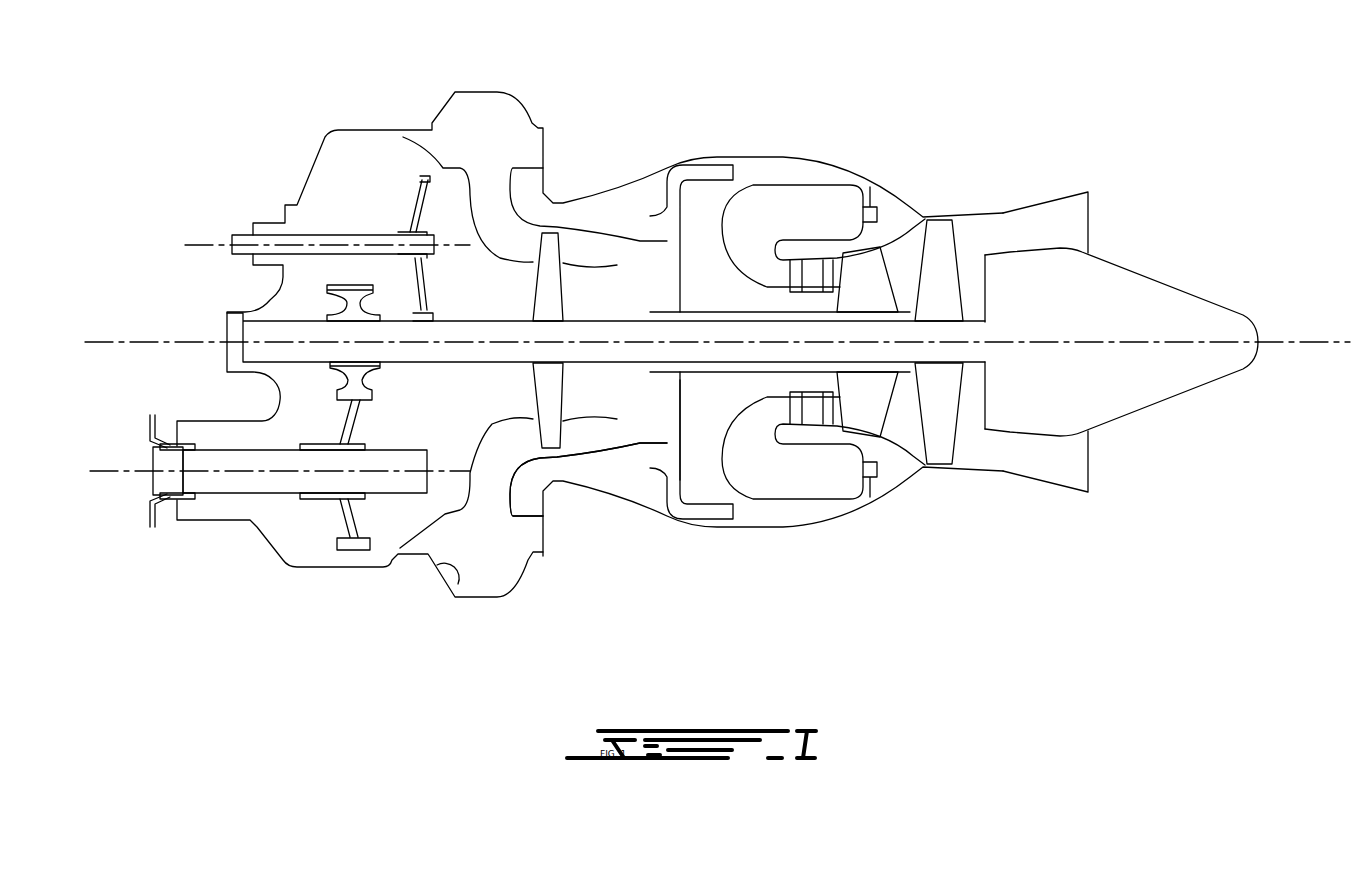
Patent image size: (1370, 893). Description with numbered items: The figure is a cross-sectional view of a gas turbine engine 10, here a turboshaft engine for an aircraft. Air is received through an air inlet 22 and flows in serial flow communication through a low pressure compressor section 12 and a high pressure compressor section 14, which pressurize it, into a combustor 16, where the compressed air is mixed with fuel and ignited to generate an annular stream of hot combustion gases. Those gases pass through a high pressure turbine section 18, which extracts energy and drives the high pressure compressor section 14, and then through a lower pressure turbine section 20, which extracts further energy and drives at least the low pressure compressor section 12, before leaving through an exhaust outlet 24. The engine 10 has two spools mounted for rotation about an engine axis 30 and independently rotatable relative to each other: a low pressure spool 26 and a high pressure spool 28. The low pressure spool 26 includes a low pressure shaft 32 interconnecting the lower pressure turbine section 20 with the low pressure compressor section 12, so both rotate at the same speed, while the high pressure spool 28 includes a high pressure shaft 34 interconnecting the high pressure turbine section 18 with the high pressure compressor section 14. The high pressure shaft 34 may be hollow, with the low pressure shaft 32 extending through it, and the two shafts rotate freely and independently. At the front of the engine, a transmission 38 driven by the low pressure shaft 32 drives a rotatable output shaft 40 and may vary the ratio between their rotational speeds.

The gas turbine engine 10 is at (1096, 146).
The low pressure compressor section 12 is at (553, 233).
The high pressure compressor section 14 is at (657, 270).
The combustor 16 is at (828, 213).
The high pressure turbine section 18 is at (867, 403).
The lower pressure turbine section 20 is at (940, 232).
The air inlet 22 is at (450, 587).
The exhaust outlet 24 is at (1068, 457).
The low pressure spool 26 is at (592, 364).
The high pressure spool 28 is at (700, 373).
The engine axis 30 is at (1300, 337).
The low pressure shaft 32 is at (487, 364).
The high pressure shaft 34 is at (741, 370).
The transmission 38 is at (312, 380).
The output shaft 40 is at (246, 473).